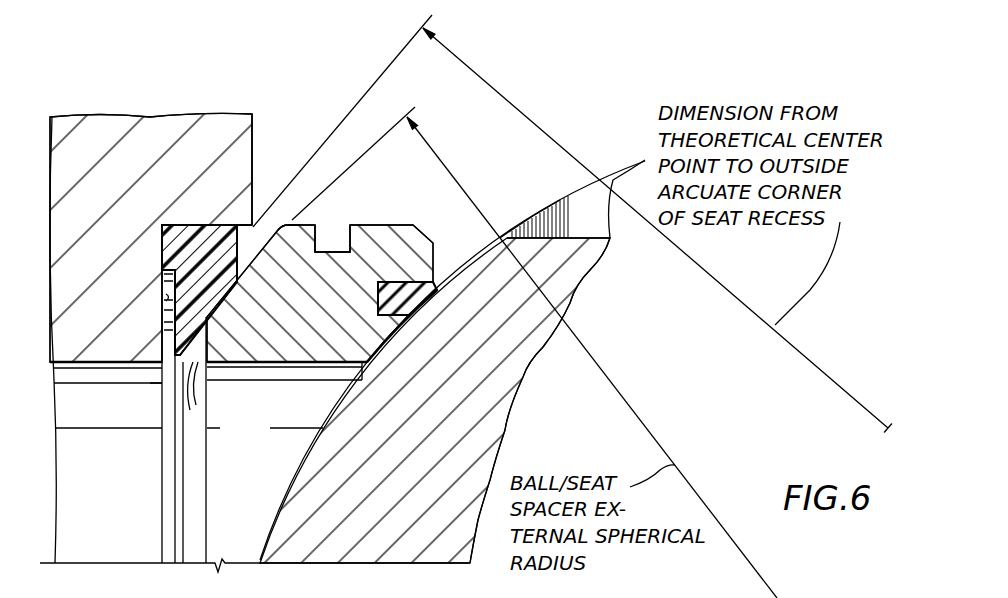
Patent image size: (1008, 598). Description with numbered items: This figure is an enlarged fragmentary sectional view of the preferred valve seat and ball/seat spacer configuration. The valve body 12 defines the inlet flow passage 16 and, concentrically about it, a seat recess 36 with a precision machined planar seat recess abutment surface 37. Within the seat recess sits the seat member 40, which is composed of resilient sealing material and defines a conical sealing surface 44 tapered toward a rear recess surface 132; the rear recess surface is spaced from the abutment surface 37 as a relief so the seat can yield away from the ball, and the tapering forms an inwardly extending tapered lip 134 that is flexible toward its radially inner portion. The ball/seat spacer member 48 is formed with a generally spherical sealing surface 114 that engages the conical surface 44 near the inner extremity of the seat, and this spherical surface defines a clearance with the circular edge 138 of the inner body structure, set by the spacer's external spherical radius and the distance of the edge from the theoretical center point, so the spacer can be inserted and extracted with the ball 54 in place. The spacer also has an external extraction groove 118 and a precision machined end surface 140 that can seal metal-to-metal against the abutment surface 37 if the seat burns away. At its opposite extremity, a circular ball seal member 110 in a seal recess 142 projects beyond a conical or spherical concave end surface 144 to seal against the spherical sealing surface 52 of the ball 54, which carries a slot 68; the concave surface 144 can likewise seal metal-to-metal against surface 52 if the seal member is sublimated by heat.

The valve body 12 is at (131, 132).
The inlet flow passage 16 is at (58, 374).
The seat recess 36 is at (160, 272).
The seat recess abutment surface 37 is at (160, 306).
The seat member 40 is at (192, 233).
The sealing surface 44 is at (190, 395).
The ball/seat spacer member 48 is at (402, 232).
The spherical sealing surface 52 is at (500, 237).
The ball 54 is at (596, 267).
The slot 68 is at (570, 200).
The circular ball seal member 110 is at (415, 297).
The spherical sealing surface 114 is at (273, 220).
The extraction groove 118 is at (333, 250).
The rear recess surface 132 is at (162, 320).
The tapered lip 134 is at (153, 364).
The circular edge 138 is at (262, 222).
The end surface 140 is at (205, 383).
The seal recess 142 is at (382, 297).
The concave end surface 144 is at (342, 380).